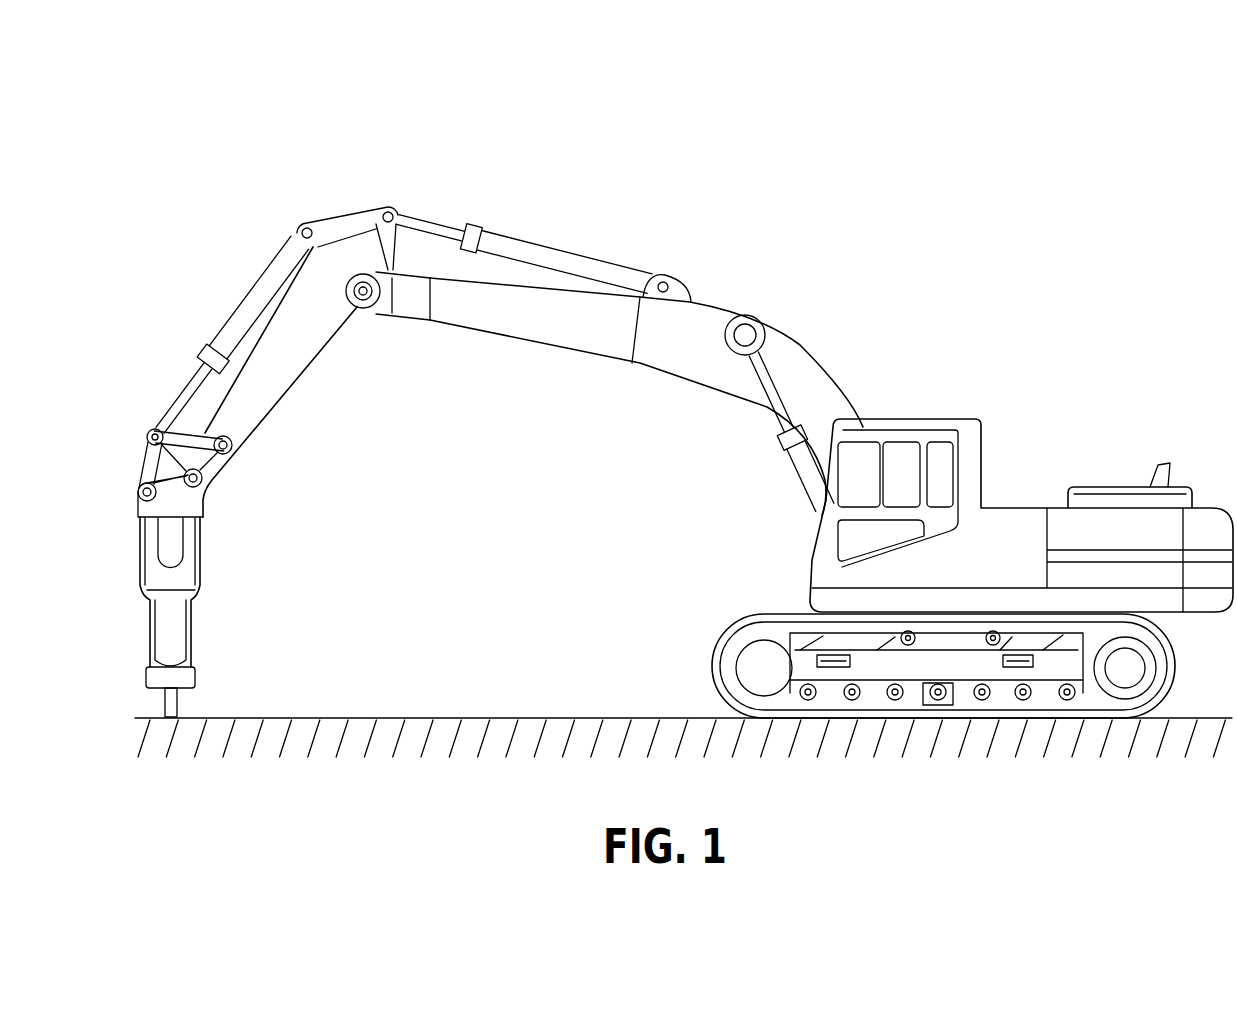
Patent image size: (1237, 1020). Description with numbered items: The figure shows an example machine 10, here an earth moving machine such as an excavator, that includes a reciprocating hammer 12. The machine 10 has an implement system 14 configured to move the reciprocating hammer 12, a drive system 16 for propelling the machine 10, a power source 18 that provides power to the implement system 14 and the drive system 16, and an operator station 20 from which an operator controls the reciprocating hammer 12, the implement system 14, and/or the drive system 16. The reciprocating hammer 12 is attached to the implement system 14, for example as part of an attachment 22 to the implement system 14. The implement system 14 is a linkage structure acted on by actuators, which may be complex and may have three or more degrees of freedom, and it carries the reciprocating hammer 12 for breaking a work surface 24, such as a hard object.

The machine 10 is at (1118, 392).
The reciprocating hammer 12 is at (128, 564).
The implement system 14 is at (891, 196).
The drive system 16 is at (710, 657).
The power source 18 is at (1127, 480).
The operator station 20 is at (905, 453).
The attachment 22 is at (199, 593).
The work surface 24 is at (337, 717).